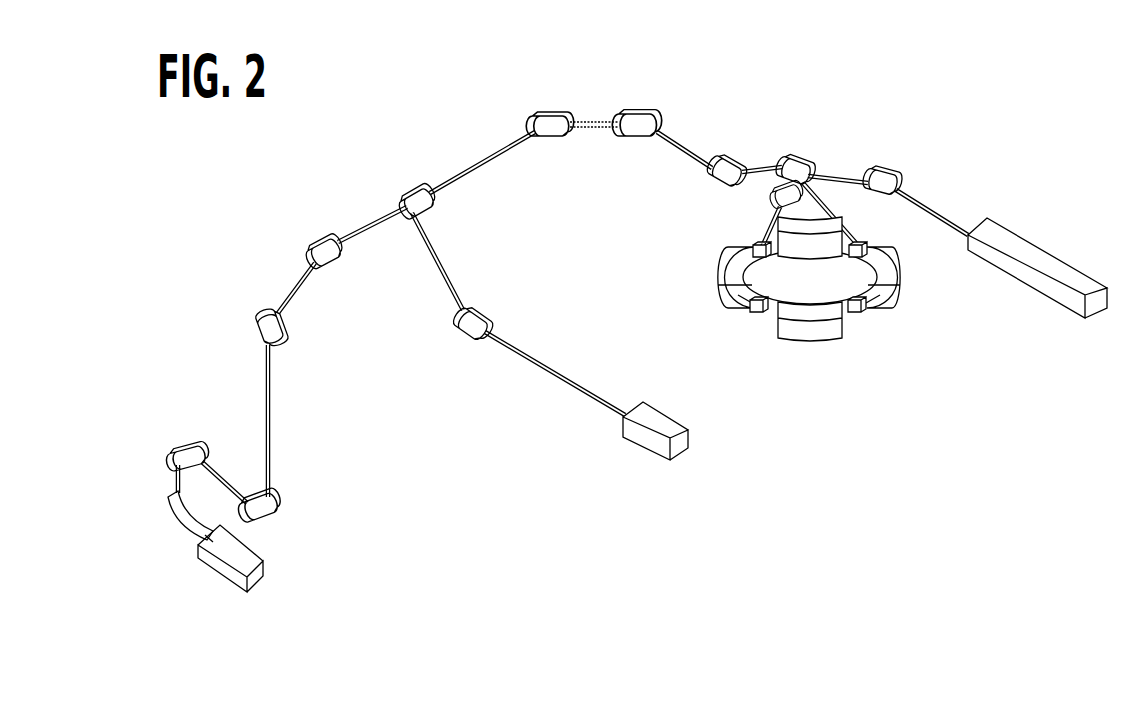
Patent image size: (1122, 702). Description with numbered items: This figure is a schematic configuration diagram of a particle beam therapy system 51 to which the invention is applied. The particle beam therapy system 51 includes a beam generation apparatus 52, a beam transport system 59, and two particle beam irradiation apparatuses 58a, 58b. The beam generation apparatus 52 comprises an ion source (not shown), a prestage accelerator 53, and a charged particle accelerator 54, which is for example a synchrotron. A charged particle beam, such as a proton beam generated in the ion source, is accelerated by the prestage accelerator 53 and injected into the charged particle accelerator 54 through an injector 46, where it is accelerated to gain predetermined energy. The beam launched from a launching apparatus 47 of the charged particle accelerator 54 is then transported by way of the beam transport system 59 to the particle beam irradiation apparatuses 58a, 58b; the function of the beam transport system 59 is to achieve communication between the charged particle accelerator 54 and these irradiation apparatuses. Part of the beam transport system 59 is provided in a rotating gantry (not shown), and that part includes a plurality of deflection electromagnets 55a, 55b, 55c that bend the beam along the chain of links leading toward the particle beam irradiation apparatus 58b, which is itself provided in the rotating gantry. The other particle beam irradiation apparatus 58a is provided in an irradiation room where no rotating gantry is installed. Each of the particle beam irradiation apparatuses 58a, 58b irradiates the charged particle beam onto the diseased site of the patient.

The particle beam therapy system 51 is at (250, 178).
The beam generation apparatus 52 is at (1032, 390).
The prestage accelerator 53 is at (1037, 293).
The charged particle accelerator 54 is at (881, 307).
The injector 46 is at (755, 244).
The launching apparatus 47 is at (858, 243).
The beam transport system 59 is at (590, 133).
The deflection electromagnet 55a is at (278, 501).
The deflection electromagnet 55b is at (189, 447).
The deflection electromagnet 55c is at (168, 518).
The particle beam irradiation apparatus 58a is at (637, 437).
The particle beam irradiation apparatus 58b is at (217, 582).